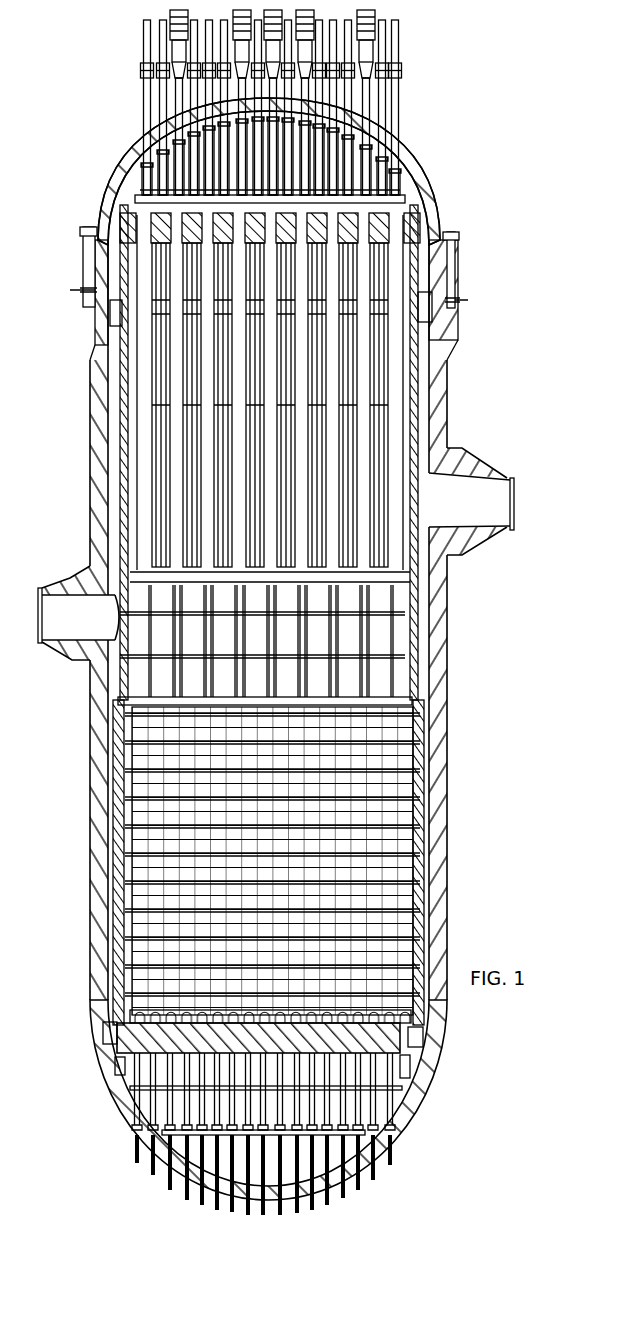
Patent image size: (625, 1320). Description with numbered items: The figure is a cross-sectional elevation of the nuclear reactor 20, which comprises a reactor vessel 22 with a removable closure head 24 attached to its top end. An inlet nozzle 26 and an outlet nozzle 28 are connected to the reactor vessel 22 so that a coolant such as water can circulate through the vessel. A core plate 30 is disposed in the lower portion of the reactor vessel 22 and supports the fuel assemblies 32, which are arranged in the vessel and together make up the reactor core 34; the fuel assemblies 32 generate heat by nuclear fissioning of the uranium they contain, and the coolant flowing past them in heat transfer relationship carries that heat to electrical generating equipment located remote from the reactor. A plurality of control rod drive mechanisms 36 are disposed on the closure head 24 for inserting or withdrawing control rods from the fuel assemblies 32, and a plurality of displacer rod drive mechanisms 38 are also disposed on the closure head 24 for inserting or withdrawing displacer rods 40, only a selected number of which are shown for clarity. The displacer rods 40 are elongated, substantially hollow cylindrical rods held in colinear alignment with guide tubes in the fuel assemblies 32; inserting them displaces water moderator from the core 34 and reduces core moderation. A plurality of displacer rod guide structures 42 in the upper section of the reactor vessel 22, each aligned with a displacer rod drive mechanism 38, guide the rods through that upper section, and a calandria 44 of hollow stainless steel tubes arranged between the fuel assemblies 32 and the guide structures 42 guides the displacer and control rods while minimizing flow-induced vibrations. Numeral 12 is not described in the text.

The reactor vessel 12 is at (90, 500).
The nuclear reactor 20 is at (297, 612).
The reactor vessel 22 is at (440, 432).
The closure head 24 is at (124, 190).
The inlet nozzle 26 is at (482, 470).
The outlet nozzle 28 is at (42, 645).
The core plate 30 is at (382, 1046).
The fuel assemblies 32 is at (378, 763).
The reactor core 34 is at (200, 861).
The control rod drive mechanisms 36 is at (160, 14).
The displacer rod drive mechanisms 38 is at (147, 45).
The displacer rods 40 is at (155, 388).
The displacer rod guide structures 42 is at (150, 356).
The calandria 44 is at (327, 649).